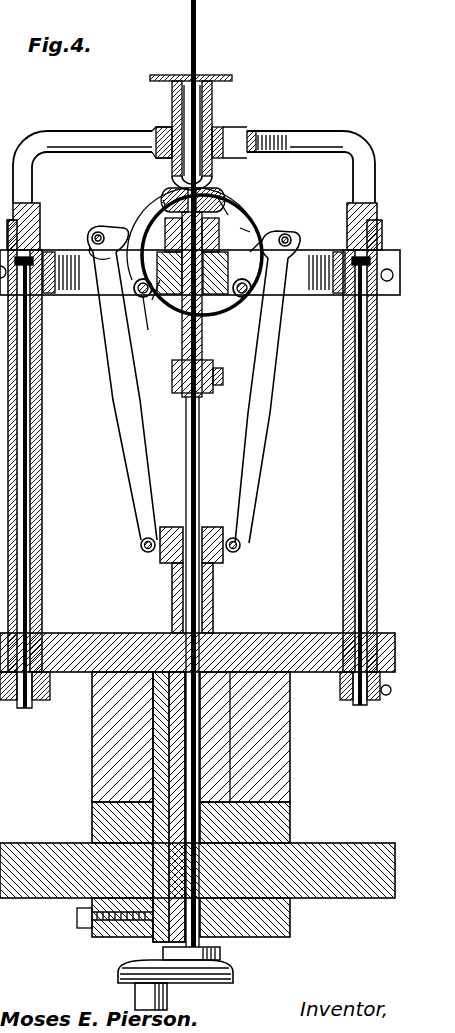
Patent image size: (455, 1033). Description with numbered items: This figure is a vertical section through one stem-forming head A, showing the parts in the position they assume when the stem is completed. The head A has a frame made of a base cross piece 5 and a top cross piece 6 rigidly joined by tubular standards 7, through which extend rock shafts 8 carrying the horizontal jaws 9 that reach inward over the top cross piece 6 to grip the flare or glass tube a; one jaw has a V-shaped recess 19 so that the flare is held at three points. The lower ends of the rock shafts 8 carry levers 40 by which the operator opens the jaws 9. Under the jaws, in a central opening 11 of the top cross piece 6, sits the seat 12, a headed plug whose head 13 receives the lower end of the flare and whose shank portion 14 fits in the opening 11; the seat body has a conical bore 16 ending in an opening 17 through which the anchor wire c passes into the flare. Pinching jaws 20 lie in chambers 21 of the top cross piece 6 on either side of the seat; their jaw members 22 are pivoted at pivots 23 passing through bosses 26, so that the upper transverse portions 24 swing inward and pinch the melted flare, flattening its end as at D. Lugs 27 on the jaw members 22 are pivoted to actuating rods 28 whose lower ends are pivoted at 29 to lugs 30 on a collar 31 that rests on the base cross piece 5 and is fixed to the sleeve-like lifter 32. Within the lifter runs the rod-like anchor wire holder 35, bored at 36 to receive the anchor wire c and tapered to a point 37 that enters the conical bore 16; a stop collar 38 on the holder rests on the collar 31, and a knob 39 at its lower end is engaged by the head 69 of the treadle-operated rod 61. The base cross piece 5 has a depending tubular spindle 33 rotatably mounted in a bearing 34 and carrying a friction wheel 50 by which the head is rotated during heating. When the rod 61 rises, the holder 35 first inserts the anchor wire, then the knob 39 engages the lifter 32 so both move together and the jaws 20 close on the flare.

The rod b is at (197, 36).
The flare or glass tube a is at (213, 98).
The horizontal jaws 9 is at (70, 131).
The V-shaped recess 19 is at (225, 132).
The upper transverse portions 24 is at (175, 192).
The pinching jaws 20 is at (165, 205).
The flattened end of the flare D is at (165, 205).
The seat 12 is at (165, 230).
The anchor wire c is at (228, 210).
The opening 17 is at (245, 232).
The opening 11 is at (252, 254).
The jaw members 22 is at (135, 268).
The lugs 27 is at (93, 234).
The point 37 is at (90, 246).
The head 13 is at (165, 243).
The chambers 21 is at (194, 272).
The pivots 23 is at (138, 295).
The bosses 26 is at (143, 297).
The shank portion 14 is at (152, 300).
The conical bore 16 is at (205, 293).
The bore 36 is at (204, 336).
The stop collar 38 is at (218, 386).
The top cross piece 6 is at (320, 296).
The actuating rods 28 is at (143, 455).
The head A is at (309, 443).
The anchor wire holder 35 is at (196, 466).
The tubular standards 7 is at (43, 478).
The rock shafts 8 is at (40, 548).
The collar 31 is at (168, 527).
The pivots 29 is at (142, 550).
The lugs 30 is at (158, 563).
The base cross piece 5 is at (74, 634).
The levers 40 is at (50, 700).
The bearing 34 is at (92, 742).
The tubular spindle 33 is at (162, 772).
The lifter 32 is at (205, 745).
The friction wheel 50 is at (38, 848).
The knob 39 is at (222, 952).
The head 69 is at (236, 973).
The rod 61 is at (168, 1002).